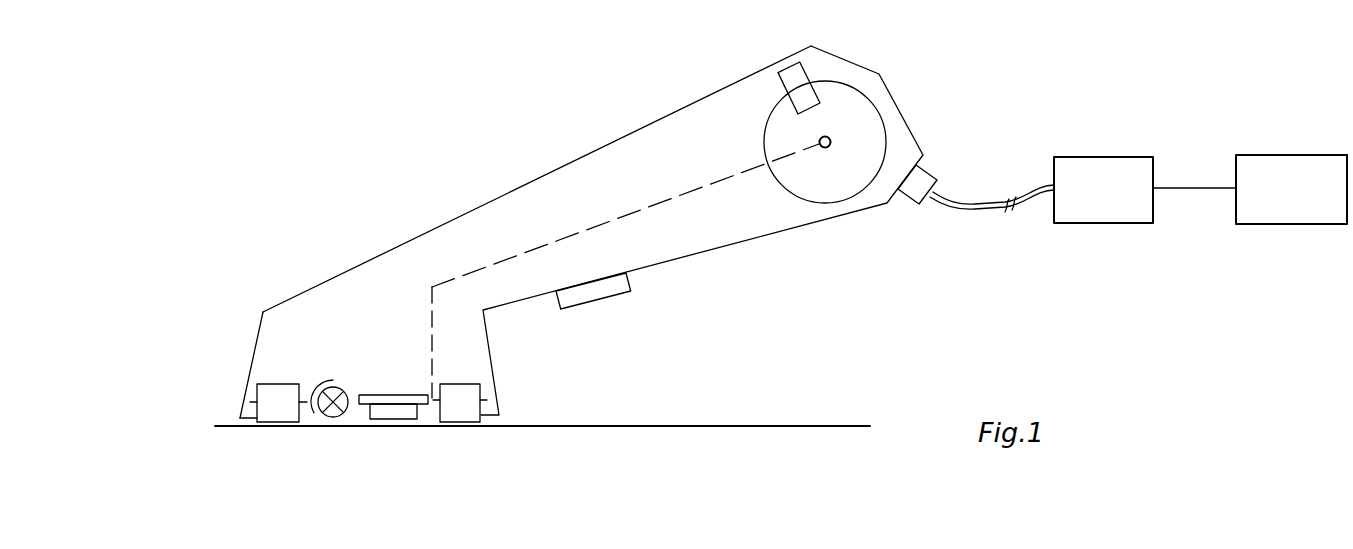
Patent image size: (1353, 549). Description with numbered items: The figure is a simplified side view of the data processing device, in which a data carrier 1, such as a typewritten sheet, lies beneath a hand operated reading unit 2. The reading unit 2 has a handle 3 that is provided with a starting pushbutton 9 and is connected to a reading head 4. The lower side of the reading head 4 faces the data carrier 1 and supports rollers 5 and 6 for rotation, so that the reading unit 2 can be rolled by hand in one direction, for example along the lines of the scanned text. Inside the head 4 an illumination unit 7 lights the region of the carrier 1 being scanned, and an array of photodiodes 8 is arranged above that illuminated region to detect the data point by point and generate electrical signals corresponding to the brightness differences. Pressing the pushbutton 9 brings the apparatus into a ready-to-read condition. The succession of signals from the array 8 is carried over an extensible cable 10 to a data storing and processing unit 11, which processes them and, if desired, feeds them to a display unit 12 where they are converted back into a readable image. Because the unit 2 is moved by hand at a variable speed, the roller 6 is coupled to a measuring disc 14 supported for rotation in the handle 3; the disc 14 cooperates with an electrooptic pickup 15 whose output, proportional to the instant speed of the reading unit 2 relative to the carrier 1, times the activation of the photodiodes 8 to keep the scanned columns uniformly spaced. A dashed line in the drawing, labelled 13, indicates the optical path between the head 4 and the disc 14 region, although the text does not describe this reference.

The data carrier 1 is at (727, 424).
The hand operated reading unit 2 is at (416, 185).
The handle 3 is at (617, 140).
The reading head 4 is at (252, 348).
The roller 5 is at (286, 384).
The roller 6 is at (455, 384).
The illumination unit 7 is at (341, 391).
The array of photodiodes 8 is at (390, 395).
The starting pushbutton 9 is at (600, 293).
The extensible cable 10 is at (968, 205).
The data storing and processing unit 11 is at (1098, 162).
The display unit 12 is at (1302, 160).
The optical path 13 is at (516, 256).
The measuring disc 14 is at (795, 185).
The pickup 15 is at (793, 82).